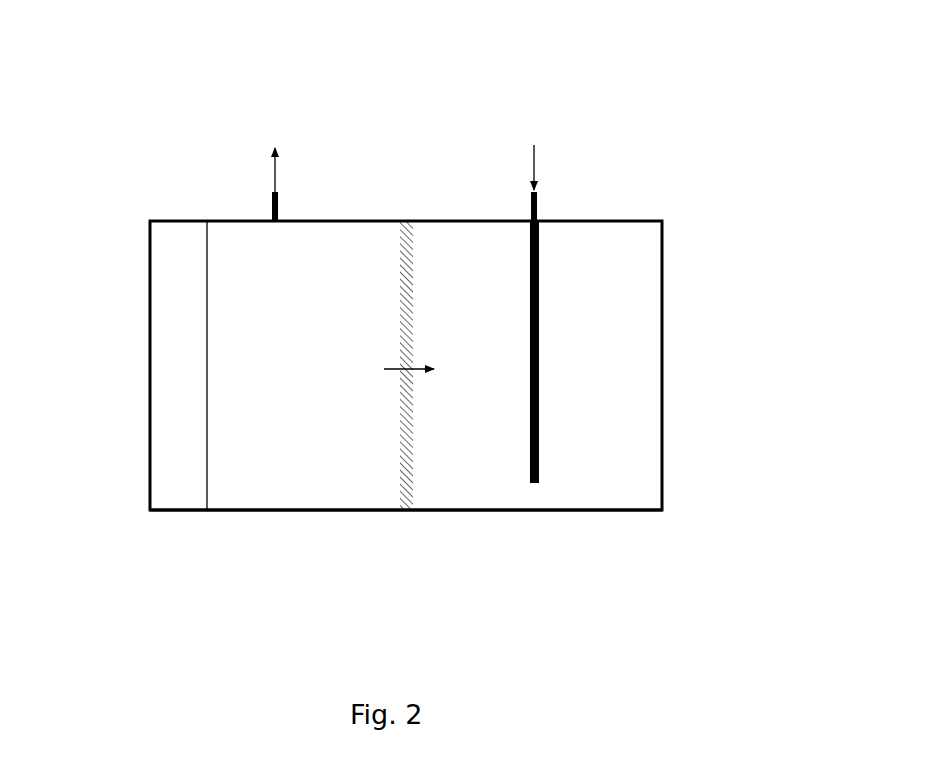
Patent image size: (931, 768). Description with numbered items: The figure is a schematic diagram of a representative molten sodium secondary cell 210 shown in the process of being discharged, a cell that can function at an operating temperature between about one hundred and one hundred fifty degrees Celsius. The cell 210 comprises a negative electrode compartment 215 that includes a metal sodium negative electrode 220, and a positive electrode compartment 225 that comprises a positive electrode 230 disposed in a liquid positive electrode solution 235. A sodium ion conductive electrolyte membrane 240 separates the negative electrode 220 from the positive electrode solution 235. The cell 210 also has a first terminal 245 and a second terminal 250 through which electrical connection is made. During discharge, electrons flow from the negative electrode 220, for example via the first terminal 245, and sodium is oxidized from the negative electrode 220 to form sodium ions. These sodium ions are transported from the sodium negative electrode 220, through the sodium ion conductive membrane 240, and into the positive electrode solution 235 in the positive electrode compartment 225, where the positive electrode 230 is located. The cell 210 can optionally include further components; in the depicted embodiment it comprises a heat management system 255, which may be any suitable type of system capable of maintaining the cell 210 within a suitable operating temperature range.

The molten sodium secondary cell 210 is at (381, 126).
The negative electrode compartment 215 is at (267, 493).
The metal sodium negative electrode 220 is at (303, 365).
The positive electrode compartment 225 is at (632, 395).
The positive electrode 230 is at (538, 465).
The liquid positive electrode solution 235 is at (435, 365).
The sodium ion conductive electrolyte membrane 240 is at (408, 467).
The first terminal 245 is at (272, 205).
The second terminal 250 is at (538, 206).
The heat management system 255 is at (163, 383).